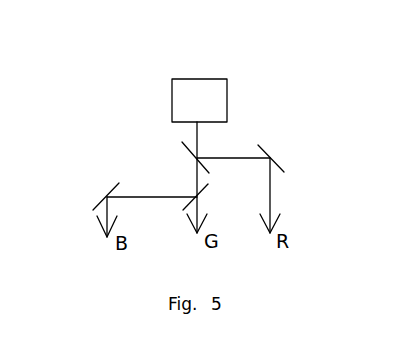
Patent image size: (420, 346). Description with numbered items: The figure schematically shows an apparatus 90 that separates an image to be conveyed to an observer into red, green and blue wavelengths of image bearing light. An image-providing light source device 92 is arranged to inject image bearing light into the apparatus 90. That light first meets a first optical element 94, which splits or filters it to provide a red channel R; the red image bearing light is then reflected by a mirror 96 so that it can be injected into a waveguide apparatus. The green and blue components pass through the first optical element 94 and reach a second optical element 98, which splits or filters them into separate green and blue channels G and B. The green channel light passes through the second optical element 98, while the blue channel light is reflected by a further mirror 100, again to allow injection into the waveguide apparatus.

The apparatus 90 is at (263, 85).
The image-providing light source device 92 is at (183, 98).
The first optical element 94 is at (186, 150).
The mirror 96 is at (266, 149).
The second optical element 98 is at (203, 190).
The mirror 100 is at (95, 205).